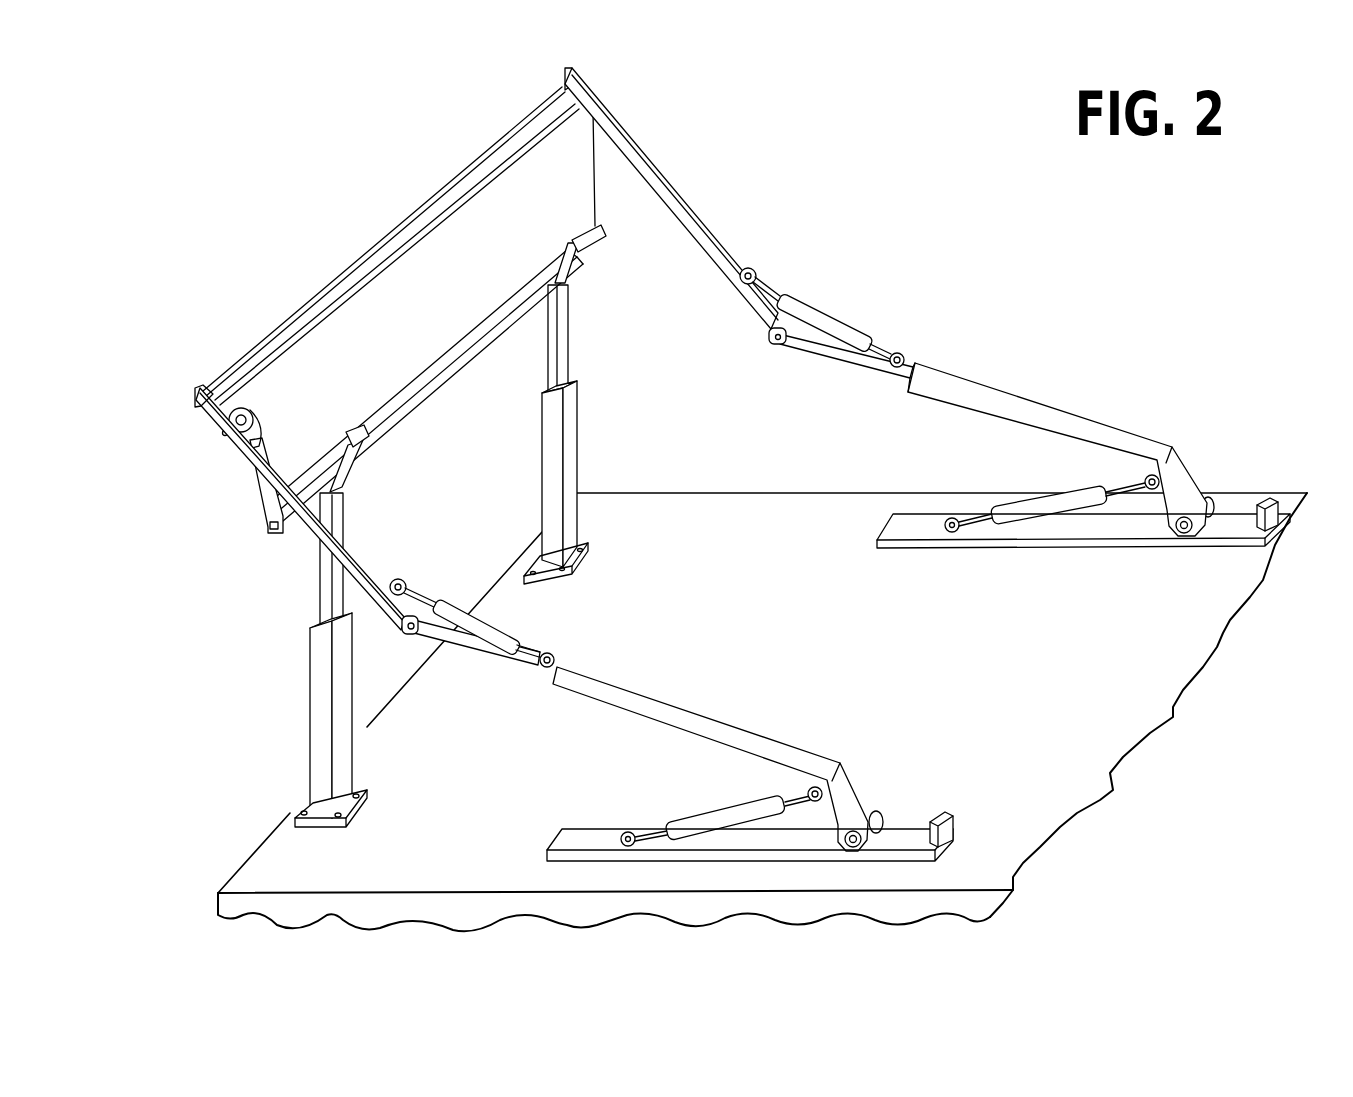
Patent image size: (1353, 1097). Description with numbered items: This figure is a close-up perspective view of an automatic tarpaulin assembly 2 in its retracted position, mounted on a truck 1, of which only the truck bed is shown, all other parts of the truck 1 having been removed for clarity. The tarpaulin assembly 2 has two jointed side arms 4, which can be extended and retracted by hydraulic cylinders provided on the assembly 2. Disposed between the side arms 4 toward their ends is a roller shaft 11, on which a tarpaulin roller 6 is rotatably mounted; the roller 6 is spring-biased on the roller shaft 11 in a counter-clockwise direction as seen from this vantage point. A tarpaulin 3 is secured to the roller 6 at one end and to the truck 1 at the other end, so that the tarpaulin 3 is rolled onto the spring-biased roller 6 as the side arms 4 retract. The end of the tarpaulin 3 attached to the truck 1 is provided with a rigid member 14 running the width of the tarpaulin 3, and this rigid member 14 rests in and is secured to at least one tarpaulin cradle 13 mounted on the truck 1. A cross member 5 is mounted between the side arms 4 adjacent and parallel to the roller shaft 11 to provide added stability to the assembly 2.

The truck 1 is at (1140, 713).
The tarpaulin assembly 2 is at (742, 464).
The tarpaulin 3 is at (463, 298).
The side arms 4 is at (721, 242).
The cross member 5 is at (448, 190).
The tarpaulin roller 6 is at (276, 376).
The roller shaft 11 is at (226, 437).
The tarpaulin cradle 13 is at (578, 262).
The rigid member 14 is at (436, 392).